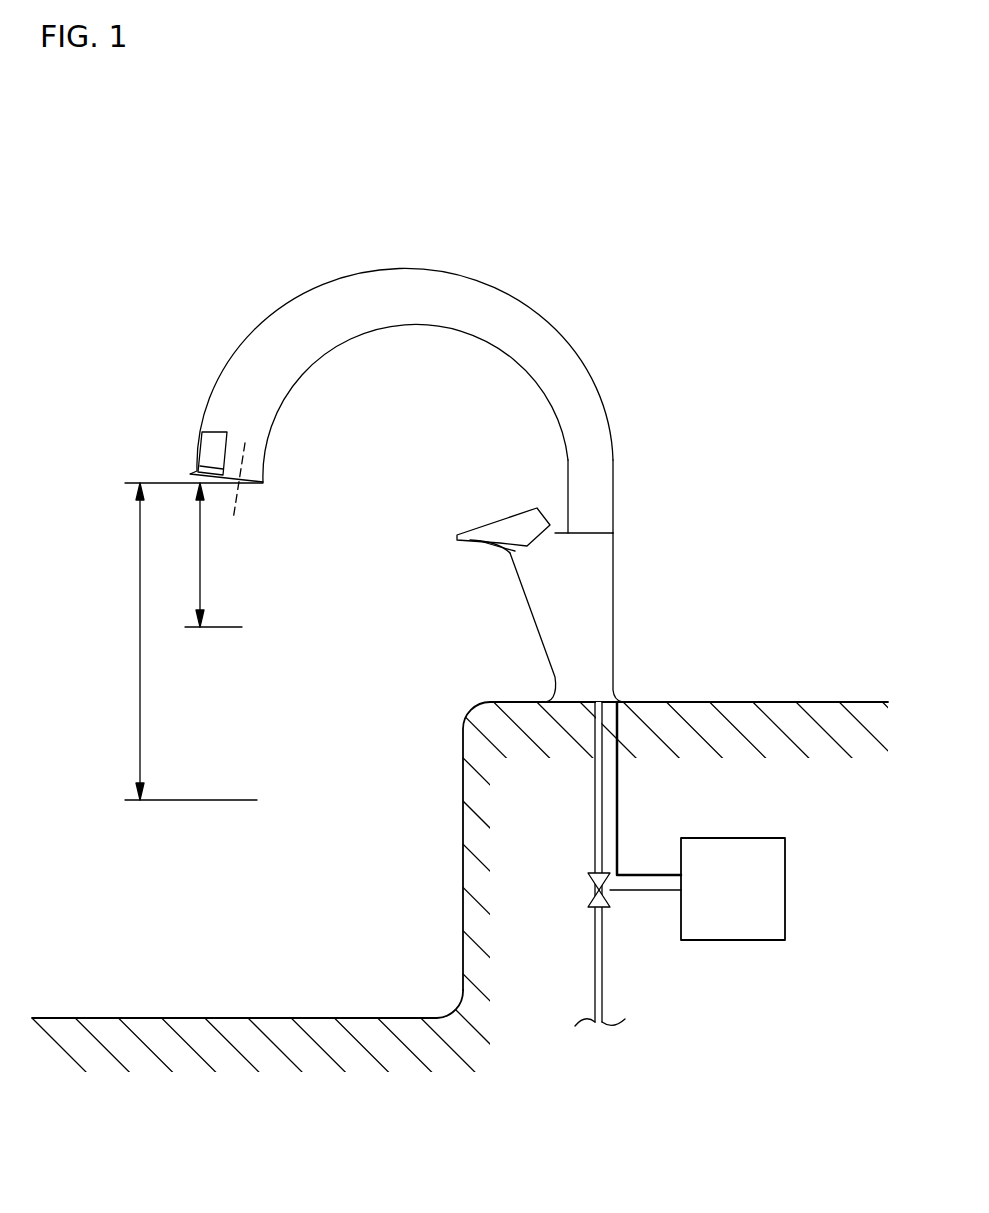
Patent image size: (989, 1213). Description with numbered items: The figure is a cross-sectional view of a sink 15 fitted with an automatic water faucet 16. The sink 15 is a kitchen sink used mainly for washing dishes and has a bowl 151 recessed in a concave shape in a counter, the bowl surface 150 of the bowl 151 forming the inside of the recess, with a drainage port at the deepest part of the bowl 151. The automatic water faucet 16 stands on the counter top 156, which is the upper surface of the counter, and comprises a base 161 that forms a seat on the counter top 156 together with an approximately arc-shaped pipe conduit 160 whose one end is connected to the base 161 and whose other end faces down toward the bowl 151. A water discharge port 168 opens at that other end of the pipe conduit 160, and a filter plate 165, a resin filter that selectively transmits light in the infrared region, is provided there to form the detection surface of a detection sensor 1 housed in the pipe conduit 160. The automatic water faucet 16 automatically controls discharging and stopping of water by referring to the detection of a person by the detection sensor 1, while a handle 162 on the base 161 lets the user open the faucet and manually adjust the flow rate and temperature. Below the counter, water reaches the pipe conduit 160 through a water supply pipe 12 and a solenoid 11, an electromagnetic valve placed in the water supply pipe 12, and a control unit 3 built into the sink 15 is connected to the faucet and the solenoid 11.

The detection sensor 1 is at (188, 430).
The control unit 3 is at (770, 838).
The solenoid 11 is at (588, 899).
The water supply pipe 12 is at (602, 977).
The sink 15 is at (356, 1147).
The automatic water faucet 16 is at (444, 222).
The bowl surface 150 is at (463, 868).
The bowl 151 is at (166, 980).
The counter top 156 is at (697, 702).
The pipe conduit 160 is at (521, 302).
The base 161 is at (602, 561).
The handle 162 is at (457, 535).
The filter plate 165 is at (200, 477).
The water discharge port 168 is at (245, 484).